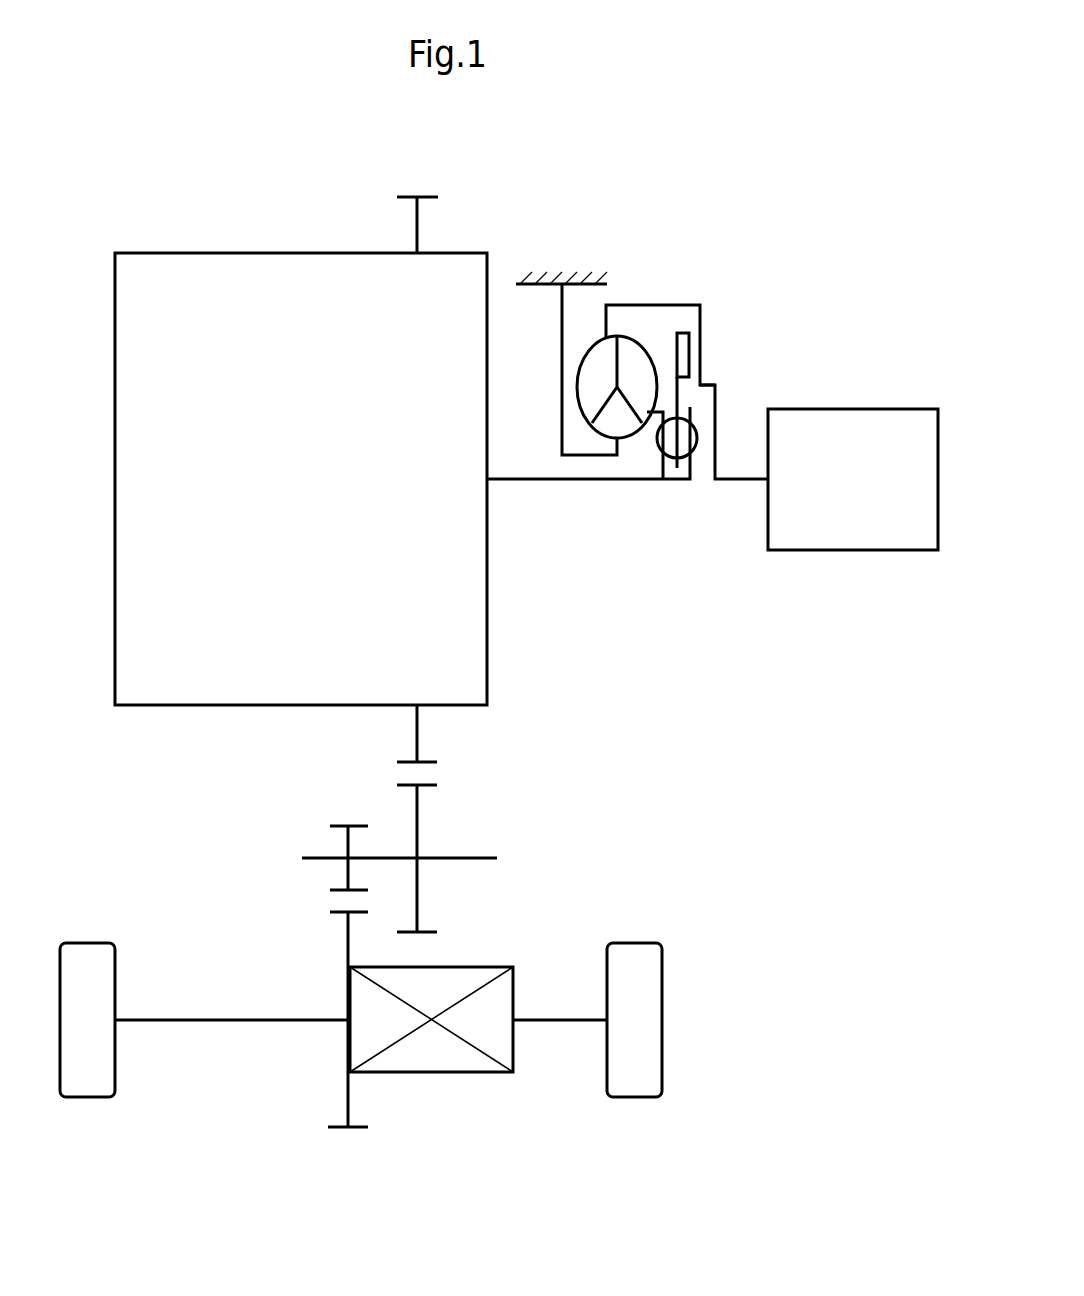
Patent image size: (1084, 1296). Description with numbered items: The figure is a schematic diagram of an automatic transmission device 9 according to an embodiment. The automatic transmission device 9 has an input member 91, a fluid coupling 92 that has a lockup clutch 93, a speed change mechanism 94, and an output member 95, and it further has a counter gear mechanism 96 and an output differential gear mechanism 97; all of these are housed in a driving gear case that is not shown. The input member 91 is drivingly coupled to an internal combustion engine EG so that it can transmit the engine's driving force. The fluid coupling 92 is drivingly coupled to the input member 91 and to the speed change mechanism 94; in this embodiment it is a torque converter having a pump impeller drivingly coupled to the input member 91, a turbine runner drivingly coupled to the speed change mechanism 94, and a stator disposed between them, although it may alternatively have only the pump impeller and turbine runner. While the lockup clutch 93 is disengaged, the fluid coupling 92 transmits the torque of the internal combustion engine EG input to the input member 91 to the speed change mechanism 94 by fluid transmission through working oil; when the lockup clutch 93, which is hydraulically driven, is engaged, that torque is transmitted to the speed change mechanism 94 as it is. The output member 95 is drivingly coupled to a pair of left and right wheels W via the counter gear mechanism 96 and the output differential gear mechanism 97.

The automatic transmission device 9 is at (166, 127).
The input member 91 is at (735, 481).
The fluid coupling 92 is at (627, 295).
The lockup clutch 93 is at (685, 325).
The speed change mechanism 94 is at (170, 715).
The output member 95 is at (428, 766).
The counter gear mechanism 96 is at (525, 853).
The output differential gear mechanism 97 is at (430, 1083).
The internal combustion engine EG is at (843, 550).
The wheels W is at (88, 1097).